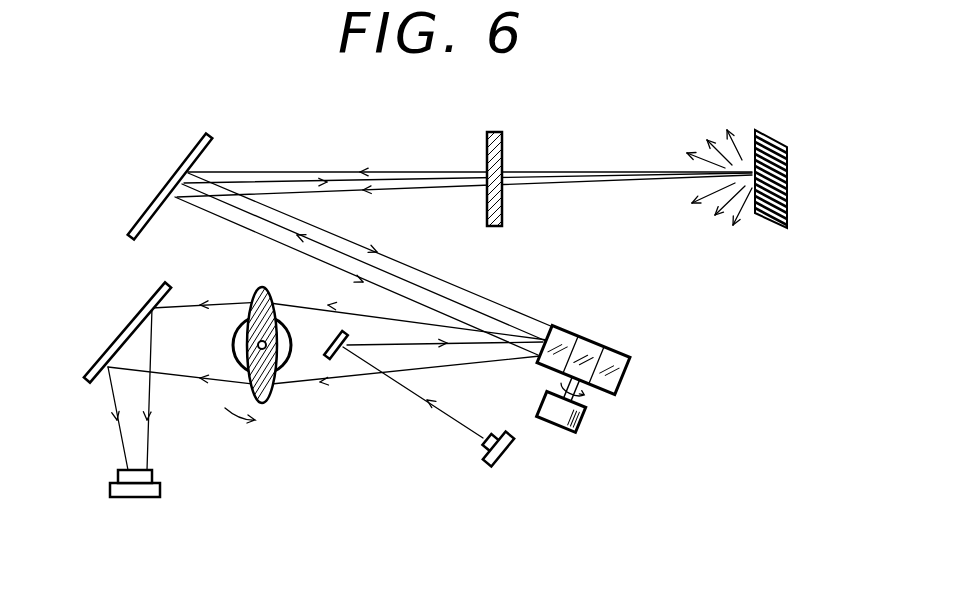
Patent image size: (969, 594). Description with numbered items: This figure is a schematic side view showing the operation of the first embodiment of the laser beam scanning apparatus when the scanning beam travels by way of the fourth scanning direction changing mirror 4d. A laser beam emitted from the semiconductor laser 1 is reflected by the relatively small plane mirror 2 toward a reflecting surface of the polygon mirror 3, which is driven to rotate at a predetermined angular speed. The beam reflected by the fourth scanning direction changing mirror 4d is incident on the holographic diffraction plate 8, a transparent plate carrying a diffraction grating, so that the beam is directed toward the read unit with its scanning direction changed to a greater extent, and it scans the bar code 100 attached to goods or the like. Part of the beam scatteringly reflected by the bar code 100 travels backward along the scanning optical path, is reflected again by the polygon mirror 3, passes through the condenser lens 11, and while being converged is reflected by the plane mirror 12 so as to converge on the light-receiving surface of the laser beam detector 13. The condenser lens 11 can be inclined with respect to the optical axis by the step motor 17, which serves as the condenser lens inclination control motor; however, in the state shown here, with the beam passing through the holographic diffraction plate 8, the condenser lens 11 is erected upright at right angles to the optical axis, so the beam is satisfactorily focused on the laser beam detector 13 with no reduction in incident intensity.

The semiconductor laser 1 is at (503, 457).
The plane mirror 2 is at (338, 356).
The polygon mirror 3 is at (628, 353).
The fourth scanning direction changing mirror 4d is at (188, 153).
The holographic diffraction plate 8 is at (505, 140).
The condenser lens 11 is at (252, 303).
The plane mirror 12 is at (118, 332).
The laser beam detector 13 is at (143, 492).
The step motor 17 is at (288, 365).
The bar code 100 is at (765, 130).